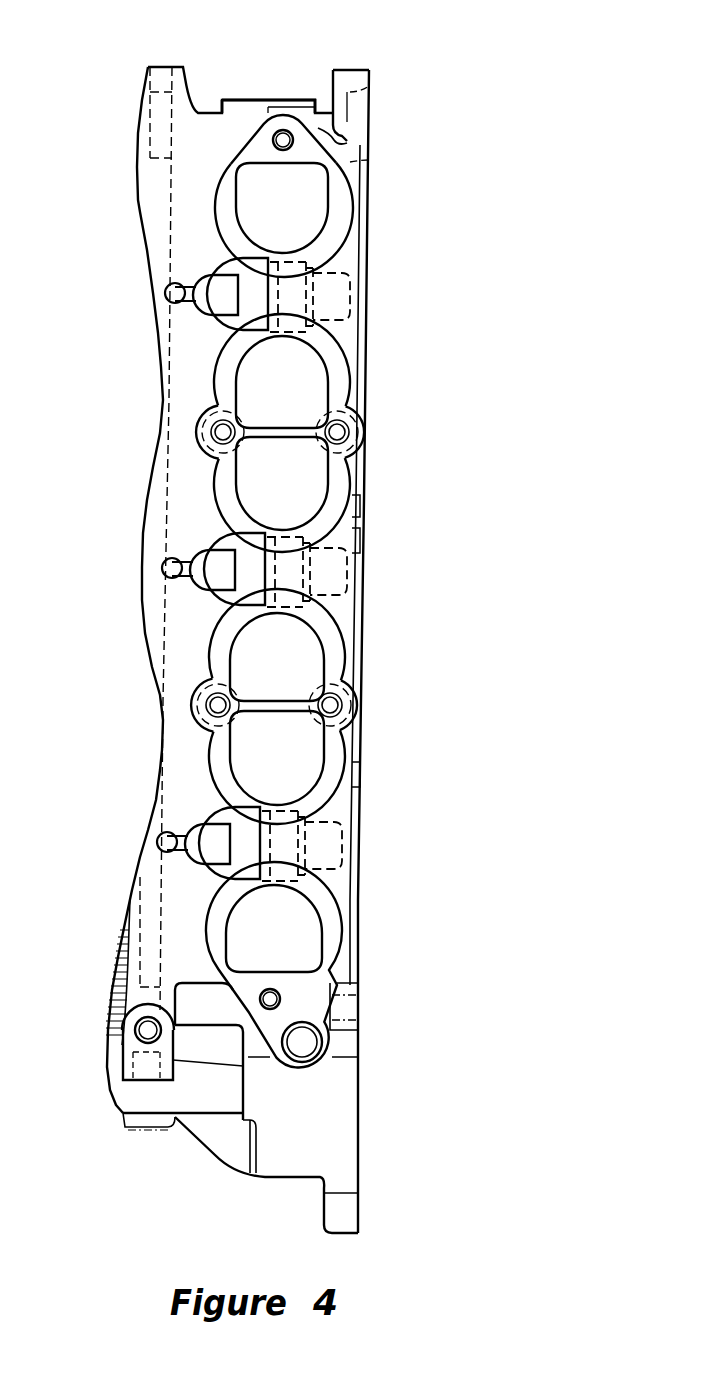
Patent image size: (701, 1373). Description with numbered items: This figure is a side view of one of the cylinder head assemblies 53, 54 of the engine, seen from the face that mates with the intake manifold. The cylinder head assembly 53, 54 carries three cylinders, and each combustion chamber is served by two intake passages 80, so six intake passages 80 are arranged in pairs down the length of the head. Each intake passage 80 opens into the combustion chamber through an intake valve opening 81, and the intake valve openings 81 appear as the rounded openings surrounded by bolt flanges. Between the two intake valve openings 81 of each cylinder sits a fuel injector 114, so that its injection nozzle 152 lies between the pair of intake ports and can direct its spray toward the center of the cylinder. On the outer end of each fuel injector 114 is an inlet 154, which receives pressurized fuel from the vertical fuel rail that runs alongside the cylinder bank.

The left cylinder head assembly 53 is at (276, 80).
The right cylinder head assembly 54 is at (276, 80).
The intake passage 80 is at (308, 212).
The intake valve opening 81 is at (318, 188).
The fuel injector 114 is at (200, 330).
The injection nozzle 152 is at (368, 287).
The inlet 154 is at (166, 293).